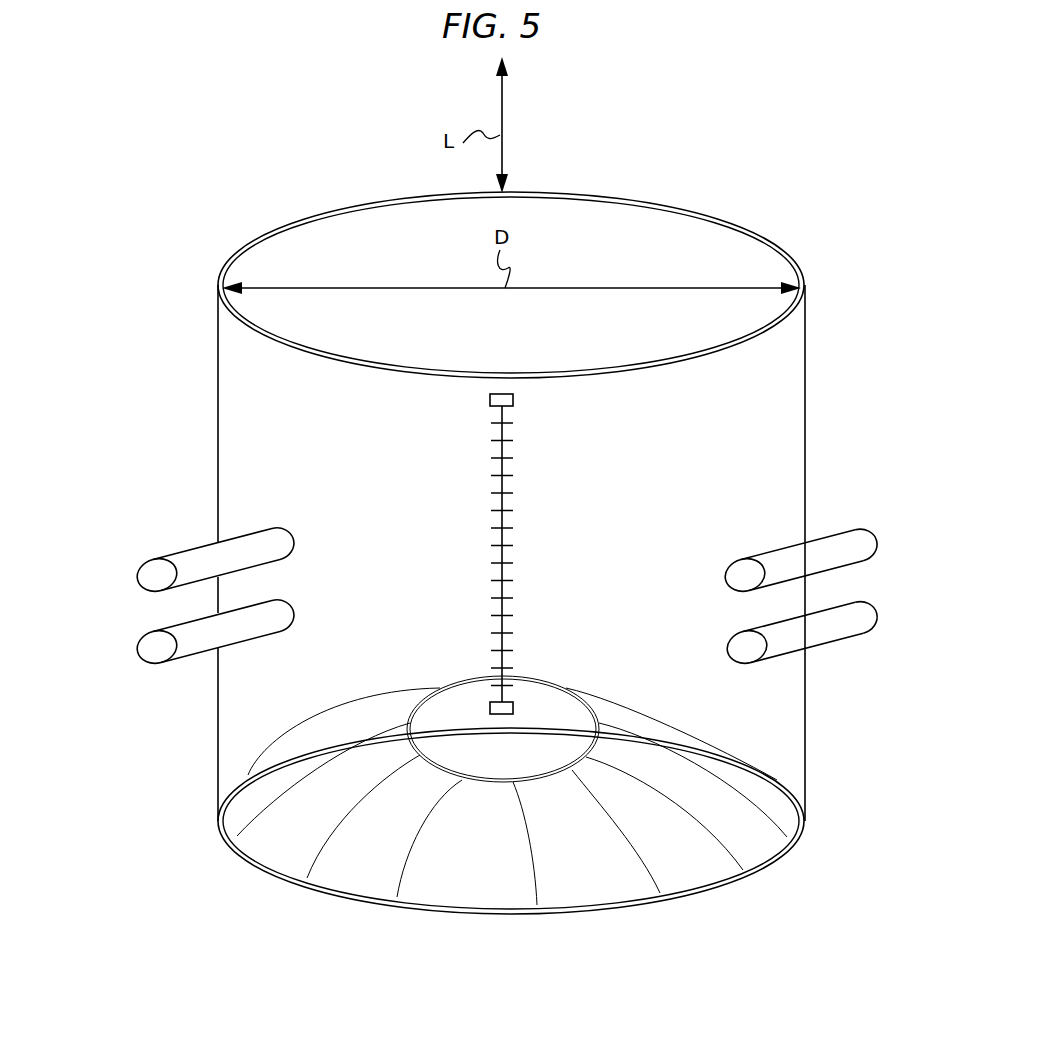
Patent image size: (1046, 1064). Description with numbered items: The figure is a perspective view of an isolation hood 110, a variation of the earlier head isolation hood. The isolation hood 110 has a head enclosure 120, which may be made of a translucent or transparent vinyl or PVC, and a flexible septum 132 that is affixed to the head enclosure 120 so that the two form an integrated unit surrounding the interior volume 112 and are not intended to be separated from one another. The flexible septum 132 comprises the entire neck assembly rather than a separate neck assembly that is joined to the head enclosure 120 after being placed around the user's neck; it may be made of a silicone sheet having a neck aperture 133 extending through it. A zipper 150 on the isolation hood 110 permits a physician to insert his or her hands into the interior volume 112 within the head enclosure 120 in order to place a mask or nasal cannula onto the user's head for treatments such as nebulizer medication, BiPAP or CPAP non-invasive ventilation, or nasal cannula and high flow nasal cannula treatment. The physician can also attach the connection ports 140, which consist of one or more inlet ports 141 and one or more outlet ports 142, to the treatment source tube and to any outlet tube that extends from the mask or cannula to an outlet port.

The isolation hood 110 is at (120, 73).
The interior volume 112 is at (342, 416).
The head enclosure 120 is at (812, 362).
The flexible septum 132 is at (258, 852).
The neck aperture 133 is at (422, 757).
The connection ports 140 is at (752, 622).
The inlet ports 141 is at (207, 652).
The outlet ports 142 is at (845, 640).
The zipper 150 is at (503, 515).